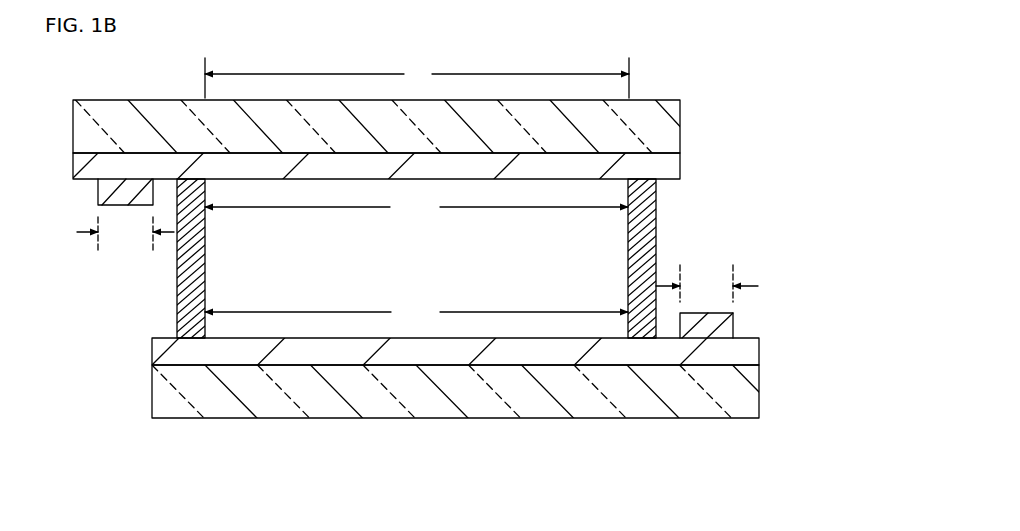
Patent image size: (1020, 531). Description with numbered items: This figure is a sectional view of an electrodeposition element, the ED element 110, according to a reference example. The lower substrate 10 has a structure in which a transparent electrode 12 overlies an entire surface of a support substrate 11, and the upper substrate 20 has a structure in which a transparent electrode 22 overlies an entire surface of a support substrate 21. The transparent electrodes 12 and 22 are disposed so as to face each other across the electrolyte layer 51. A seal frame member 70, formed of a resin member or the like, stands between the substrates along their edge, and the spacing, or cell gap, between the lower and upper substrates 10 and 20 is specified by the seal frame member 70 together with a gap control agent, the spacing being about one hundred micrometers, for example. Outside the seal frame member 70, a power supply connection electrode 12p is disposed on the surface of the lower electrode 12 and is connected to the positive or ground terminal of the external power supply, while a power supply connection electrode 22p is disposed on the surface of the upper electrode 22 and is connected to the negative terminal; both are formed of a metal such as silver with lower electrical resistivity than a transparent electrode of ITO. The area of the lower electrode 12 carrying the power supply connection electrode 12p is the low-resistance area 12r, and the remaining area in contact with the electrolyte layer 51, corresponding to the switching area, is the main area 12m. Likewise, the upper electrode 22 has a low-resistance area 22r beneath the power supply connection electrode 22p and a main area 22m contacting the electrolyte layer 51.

The ED element 110 is at (829, 441).
The lower substrate 10 is at (440, 336).
The support substrate 11 is at (492, 391).
The transparent electrode 12 is at (492, 306).
The power supply connection electrode 12p is at (750, 314).
The low-resistance area 12r is at (706, 285).
The main area 12m is at (416, 312).
The upper substrate 20 is at (394, 161).
The support substrate 21 is at (413, 126).
The transparent electrode 22 is at (394, 208).
The power supply connection electrode 22p is at (94, 196).
The low-resistance area 22r is at (125, 233).
The main area 22m is at (416, 207).
The electrolyte layer 51 is at (573, 249).
The seal frame member 70 is at (415, 257).